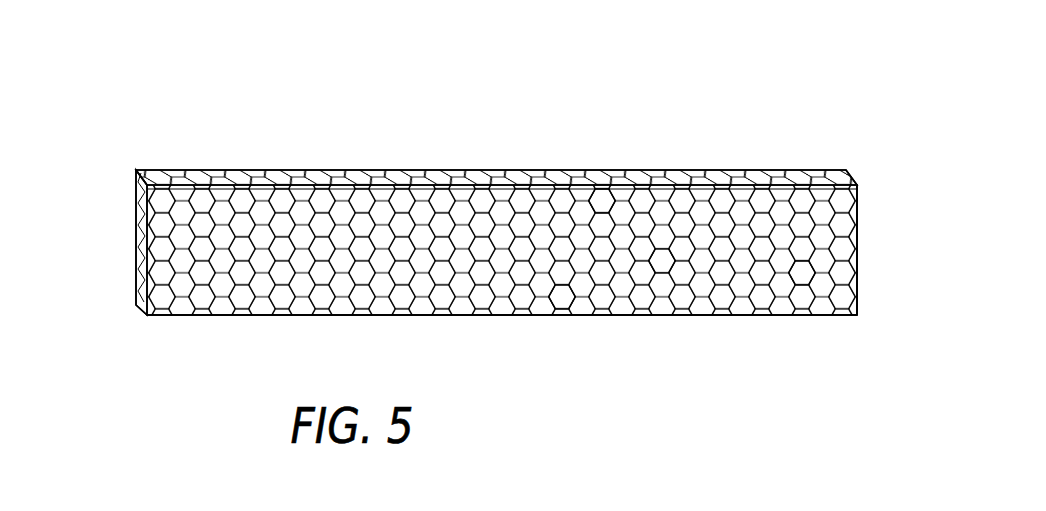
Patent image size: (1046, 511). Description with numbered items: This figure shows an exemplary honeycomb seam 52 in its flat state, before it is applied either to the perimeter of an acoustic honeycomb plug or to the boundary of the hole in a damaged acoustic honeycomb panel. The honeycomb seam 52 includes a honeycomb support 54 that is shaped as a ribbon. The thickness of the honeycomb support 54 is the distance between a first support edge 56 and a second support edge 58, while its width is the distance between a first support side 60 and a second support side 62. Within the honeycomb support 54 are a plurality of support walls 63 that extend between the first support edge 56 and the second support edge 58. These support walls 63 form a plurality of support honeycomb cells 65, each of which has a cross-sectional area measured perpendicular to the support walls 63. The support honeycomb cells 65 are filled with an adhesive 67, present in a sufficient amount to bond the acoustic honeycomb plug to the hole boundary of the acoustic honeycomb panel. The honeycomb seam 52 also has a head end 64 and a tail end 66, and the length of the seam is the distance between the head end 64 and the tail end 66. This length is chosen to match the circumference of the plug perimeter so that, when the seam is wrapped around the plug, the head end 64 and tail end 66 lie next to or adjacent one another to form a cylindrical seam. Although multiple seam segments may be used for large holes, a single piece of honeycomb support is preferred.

The honeycomb seam 52 is at (730, 140).
The honeycomb support 54 is at (812, 272).
The first support edge 56 is at (257, 187).
The second support edge 58 is at (172, 170).
The first support side 60 is at (475, 176).
The second support side 62 is at (277, 315).
The support walls 63 is at (556, 294).
The head end 64 is at (148, 253).
The support honeycomb cells 65 is at (659, 263).
The tail end 66 is at (858, 237).
The adhesive 67 is at (598, 203).